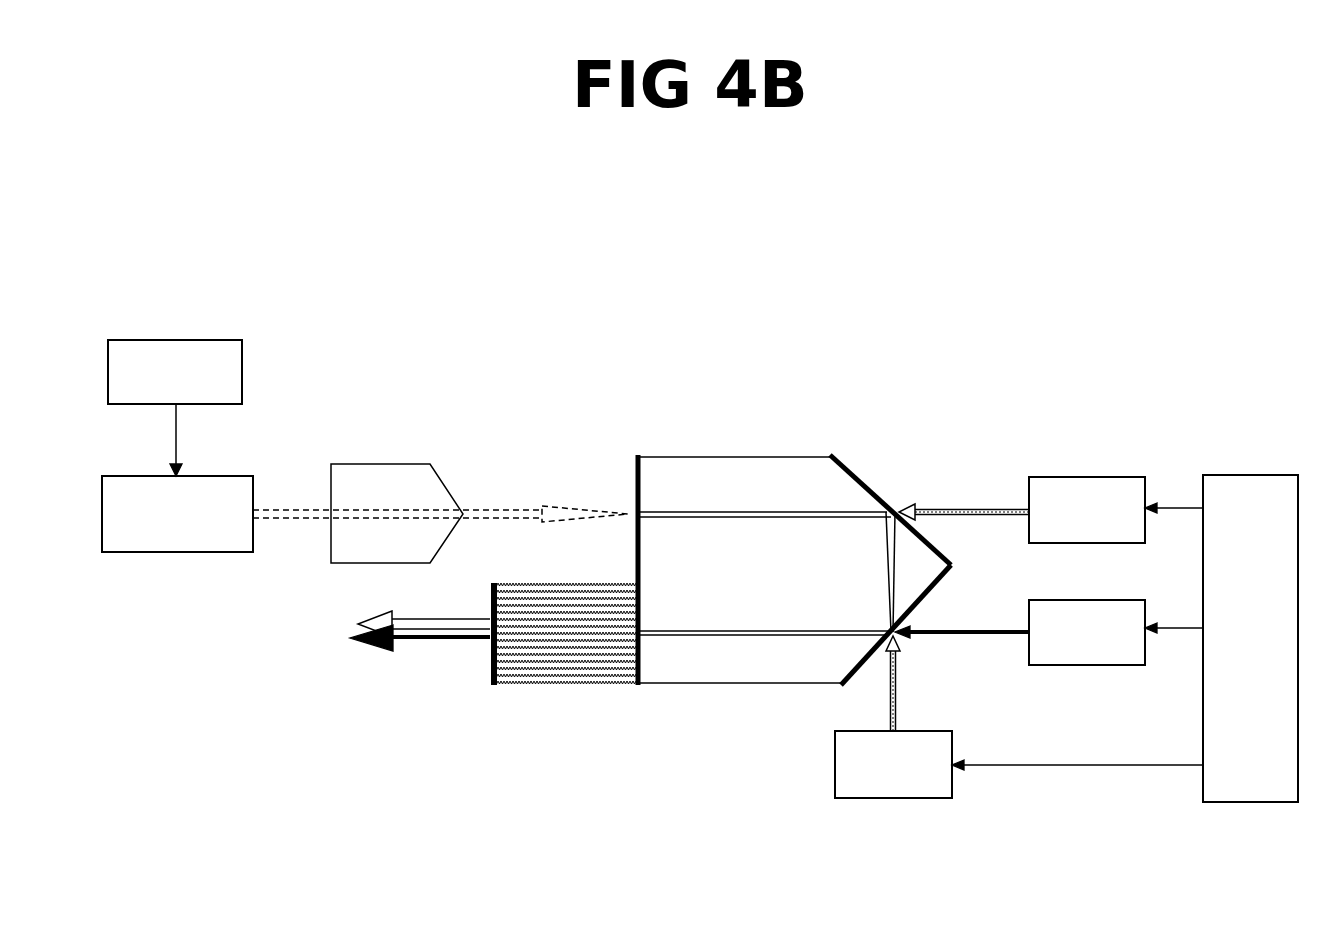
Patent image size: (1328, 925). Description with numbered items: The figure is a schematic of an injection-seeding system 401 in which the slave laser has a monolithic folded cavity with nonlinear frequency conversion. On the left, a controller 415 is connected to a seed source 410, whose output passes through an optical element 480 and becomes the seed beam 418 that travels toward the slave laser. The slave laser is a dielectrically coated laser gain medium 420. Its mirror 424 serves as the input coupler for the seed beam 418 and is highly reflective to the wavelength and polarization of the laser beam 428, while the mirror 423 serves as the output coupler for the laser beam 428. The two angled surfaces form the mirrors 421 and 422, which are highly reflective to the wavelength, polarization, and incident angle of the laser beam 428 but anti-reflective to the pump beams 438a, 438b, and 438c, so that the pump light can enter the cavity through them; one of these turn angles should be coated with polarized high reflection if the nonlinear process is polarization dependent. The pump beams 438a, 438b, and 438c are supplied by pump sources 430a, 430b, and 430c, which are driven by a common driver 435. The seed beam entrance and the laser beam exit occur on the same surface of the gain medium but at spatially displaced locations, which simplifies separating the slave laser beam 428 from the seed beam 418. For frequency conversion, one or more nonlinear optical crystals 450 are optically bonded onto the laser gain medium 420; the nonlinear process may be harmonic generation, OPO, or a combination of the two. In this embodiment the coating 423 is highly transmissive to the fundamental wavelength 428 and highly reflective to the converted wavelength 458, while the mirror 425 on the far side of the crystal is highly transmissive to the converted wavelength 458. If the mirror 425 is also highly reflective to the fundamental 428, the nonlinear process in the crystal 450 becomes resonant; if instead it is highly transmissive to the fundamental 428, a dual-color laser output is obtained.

The optical system 401 is at (891, 266).
The controller 415 is at (175, 408).
The light source 410 is at (177, 514).
The optical element 480 is at (397, 513).
The seed beam 418 is at (440, 494).
The laser gain medium 420 is at (740, 570).
The mirror 421 is at (890, 510).
The mirror 422 is at (871, 644).
The mirror 424 is at (764, 491).
The mirror 423 is at (765, 656).
The laser beam 428 is at (626, 574).
The converted wavelength 458 is at (420, 652).
The mirror 425 is at (502, 658).
The nonlinear optical crystal 450 is at (567, 634).
The pump beam 438a is at (964, 529).
The pump beam 438b is at (962, 614).
The pump beam 438c is at (937, 683).
The first light source 430a is at (1087, 510).
The second light source 430b is at (1087, 632).
The third light source 430c is at (893, 764).
The light source controller 435 is at (1125, 638).